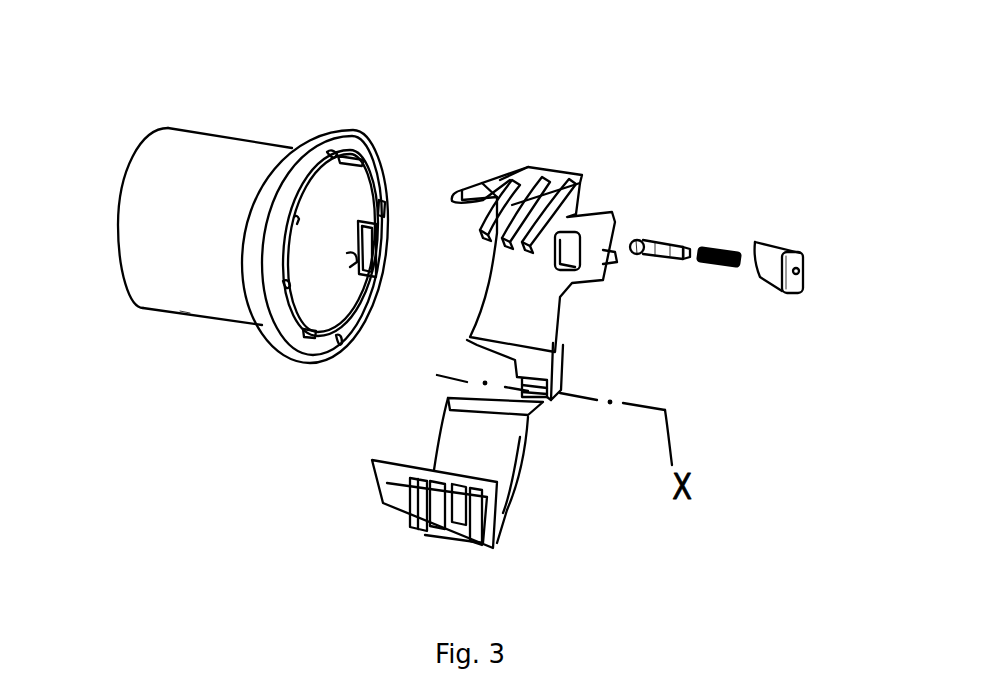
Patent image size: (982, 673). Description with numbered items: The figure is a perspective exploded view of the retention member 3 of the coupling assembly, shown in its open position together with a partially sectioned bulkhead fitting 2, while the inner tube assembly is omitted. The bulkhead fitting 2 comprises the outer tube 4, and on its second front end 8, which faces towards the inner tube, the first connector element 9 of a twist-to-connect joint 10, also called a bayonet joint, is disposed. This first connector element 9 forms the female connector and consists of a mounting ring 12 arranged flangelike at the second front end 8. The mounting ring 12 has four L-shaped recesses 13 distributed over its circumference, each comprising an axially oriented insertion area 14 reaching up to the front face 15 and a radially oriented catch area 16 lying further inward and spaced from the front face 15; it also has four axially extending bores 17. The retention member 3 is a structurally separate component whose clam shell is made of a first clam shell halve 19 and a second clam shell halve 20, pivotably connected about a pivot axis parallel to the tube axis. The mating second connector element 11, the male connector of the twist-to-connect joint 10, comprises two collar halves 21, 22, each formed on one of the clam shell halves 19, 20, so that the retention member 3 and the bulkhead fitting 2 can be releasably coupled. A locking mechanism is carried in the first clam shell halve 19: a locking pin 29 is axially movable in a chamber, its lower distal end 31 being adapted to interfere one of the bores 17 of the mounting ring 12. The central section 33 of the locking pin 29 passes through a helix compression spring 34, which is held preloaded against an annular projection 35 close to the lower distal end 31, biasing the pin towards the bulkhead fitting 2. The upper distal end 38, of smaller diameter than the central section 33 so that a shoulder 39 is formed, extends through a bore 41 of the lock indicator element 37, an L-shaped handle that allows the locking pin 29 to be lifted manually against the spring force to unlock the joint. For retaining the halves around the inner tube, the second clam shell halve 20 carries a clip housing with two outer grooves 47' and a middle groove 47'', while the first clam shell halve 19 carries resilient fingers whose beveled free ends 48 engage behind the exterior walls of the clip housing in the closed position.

The bulkhead fitting 2 is at (183, 316).
The retention member 3 is at (636, 195).
The outer tube 4 is at (160, 165).
The second front end 8 is at (296, 144).
The first connector element 9 is at (353, 128).
The twist-to-connect joint 10 is at (500, 133).
The second connector element 11 is at (484, 184).
The mounting ring 12 is at (278, 337).
The L-shaped recesses 13 is at (310, 190).
The insertion area 14 is at (384, 163).
The front face 15 is at (300, 350).
The catch area 16 is at (367, 337).
The axially extending bores 17 is at (292, 287).
The first clam shell halve 19 is at (498, 313).
The second clam shell halve 20 is at (450, 443).
The collar halve 21 is at (463, 193).
The collar halve 22 is at (380, 503).
The locking pin 29 is at (658, 242).
The lower distal end 31 is at (633, 257).
The central section 33 is at (650, 257).
The helix compression spring 34 is at (720, 250).
The annular projection 35 is at (637, 257).
The lock indicator element 37 is at (780, 242).
The upper distal end 38 is at (685, 260).
The shoulder 39 is at (678, 252).
The bore 41 is at (805, 270).
The outer grooves 47' is at (448, 552).
The middle groove 47'' is at (446, 554).
The beveled free ends 48 is at (495, 232).